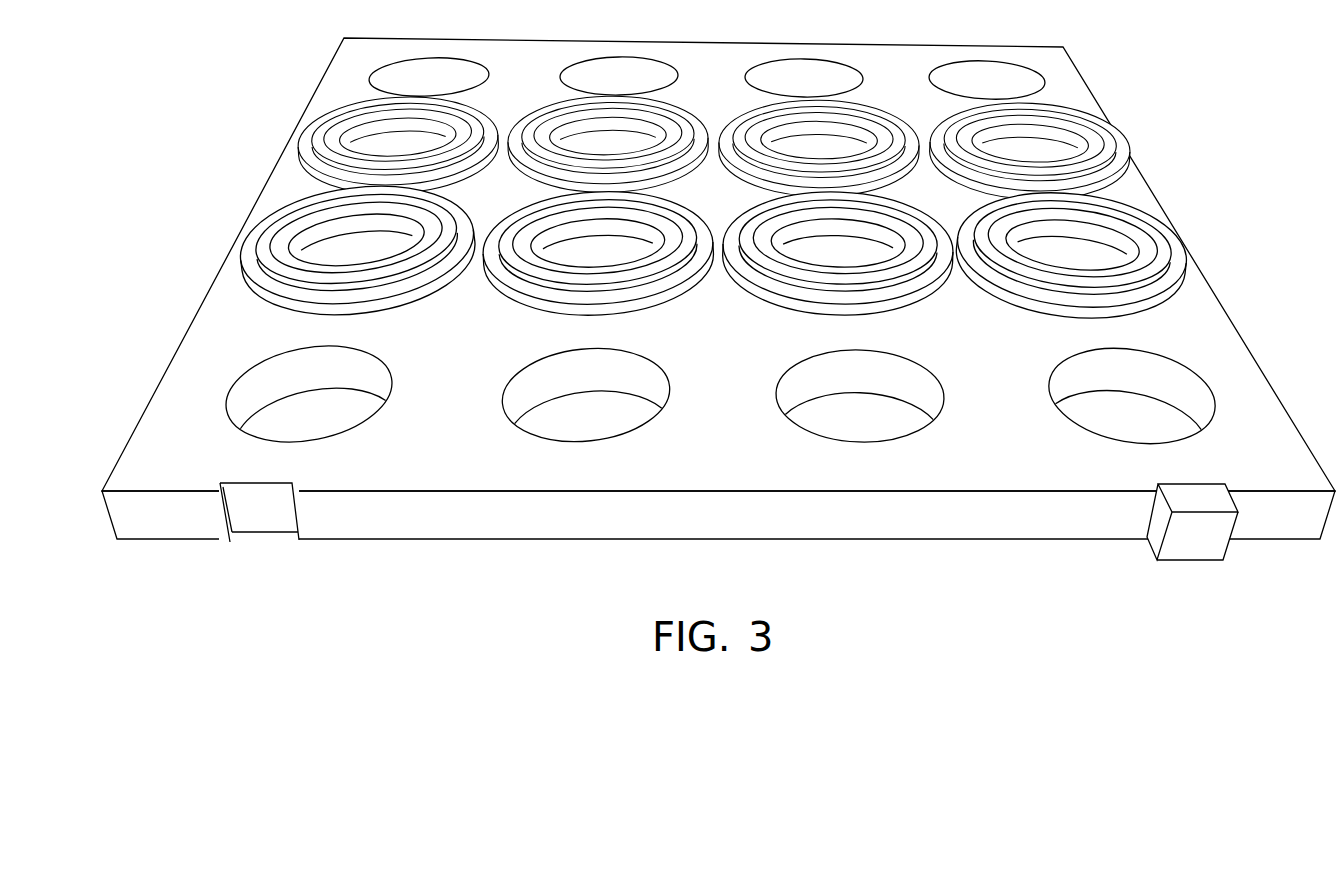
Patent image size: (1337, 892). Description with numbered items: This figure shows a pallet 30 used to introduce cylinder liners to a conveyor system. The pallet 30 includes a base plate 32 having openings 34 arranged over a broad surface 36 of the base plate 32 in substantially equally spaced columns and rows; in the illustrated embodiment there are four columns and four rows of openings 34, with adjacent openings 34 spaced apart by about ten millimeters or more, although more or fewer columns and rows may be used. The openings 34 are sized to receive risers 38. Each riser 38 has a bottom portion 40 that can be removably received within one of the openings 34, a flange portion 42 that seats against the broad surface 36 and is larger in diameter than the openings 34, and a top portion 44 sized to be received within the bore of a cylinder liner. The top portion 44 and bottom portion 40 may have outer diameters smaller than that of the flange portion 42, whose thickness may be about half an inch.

The pallet 30 is at (709, 310).
The base plate 32 is at (742, 405).
The openings 34 is at (912, 378).
The broad surface 36 is at (960, 440).
The risers 38 is at (672, 258).
The bottom portion 40 is at (610, 253).
The flange portion 42 is at (525, 297).
The top portion 44 is at (520, 270).